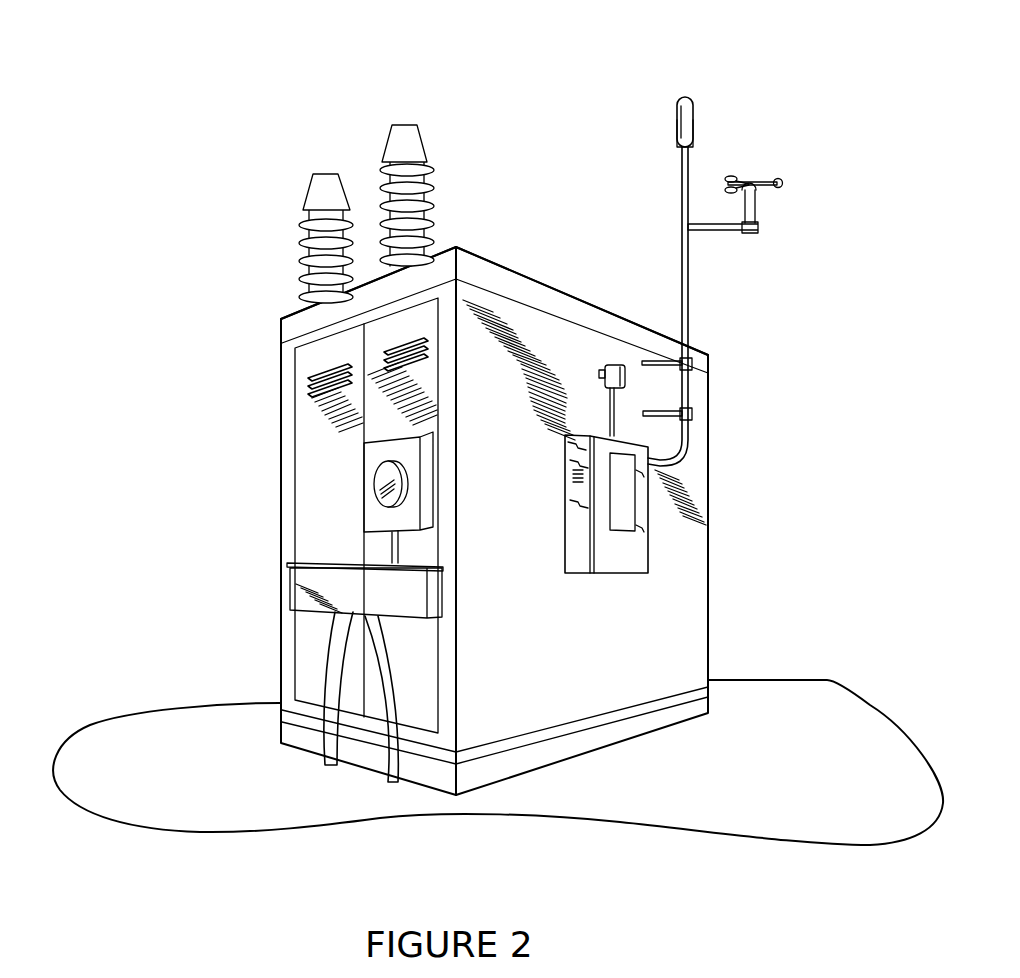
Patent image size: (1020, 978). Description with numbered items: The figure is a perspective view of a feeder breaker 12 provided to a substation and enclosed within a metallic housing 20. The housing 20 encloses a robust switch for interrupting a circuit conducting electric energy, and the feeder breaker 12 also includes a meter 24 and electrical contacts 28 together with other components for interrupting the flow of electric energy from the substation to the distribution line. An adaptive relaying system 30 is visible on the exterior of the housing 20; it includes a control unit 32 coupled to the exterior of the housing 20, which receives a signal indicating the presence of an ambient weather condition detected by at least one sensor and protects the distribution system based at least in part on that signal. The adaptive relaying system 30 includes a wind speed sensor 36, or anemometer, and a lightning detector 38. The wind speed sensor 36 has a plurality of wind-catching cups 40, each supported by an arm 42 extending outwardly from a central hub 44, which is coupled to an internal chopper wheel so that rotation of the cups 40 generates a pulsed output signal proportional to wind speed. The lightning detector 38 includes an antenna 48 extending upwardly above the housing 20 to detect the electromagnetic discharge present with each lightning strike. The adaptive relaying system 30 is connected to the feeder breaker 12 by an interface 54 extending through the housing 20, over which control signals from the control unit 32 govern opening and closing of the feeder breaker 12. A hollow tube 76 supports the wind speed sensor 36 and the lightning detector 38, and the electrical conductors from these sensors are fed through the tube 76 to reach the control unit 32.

The feeder breaker 12 is at (535, 233).
The housing 20 is at (667, 617).
The meter 24 is at (377, 490).
The electrical contacts 28 is at (320, 192).
The adaptive relaying system 30 is at (647, 548).
The control unit 32 is at (620, 557).
The wind speed sensor 36 is at (760, 197).
The lightning detector 38 is at (688, 98).
The wind-catching cups 40 is at (783, 182).
The arm 42 is at (766, 181).
The central hub 44 is at (748, 181).
The antenna 48 is at (680, 128).
The interface 54 is at (604, 367).
The hollow tube 76 is at (690, 307).